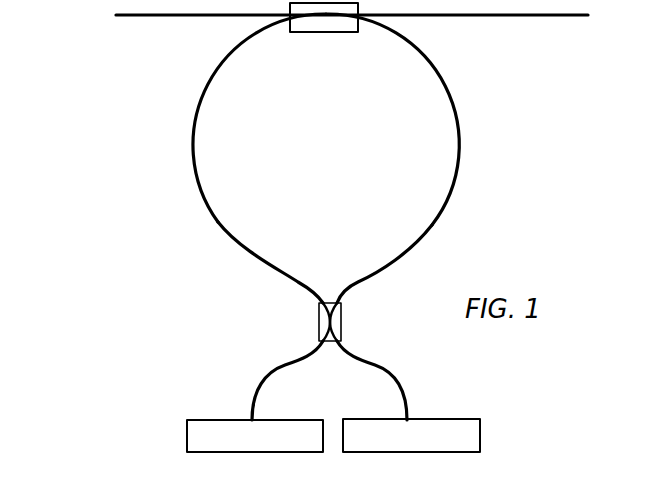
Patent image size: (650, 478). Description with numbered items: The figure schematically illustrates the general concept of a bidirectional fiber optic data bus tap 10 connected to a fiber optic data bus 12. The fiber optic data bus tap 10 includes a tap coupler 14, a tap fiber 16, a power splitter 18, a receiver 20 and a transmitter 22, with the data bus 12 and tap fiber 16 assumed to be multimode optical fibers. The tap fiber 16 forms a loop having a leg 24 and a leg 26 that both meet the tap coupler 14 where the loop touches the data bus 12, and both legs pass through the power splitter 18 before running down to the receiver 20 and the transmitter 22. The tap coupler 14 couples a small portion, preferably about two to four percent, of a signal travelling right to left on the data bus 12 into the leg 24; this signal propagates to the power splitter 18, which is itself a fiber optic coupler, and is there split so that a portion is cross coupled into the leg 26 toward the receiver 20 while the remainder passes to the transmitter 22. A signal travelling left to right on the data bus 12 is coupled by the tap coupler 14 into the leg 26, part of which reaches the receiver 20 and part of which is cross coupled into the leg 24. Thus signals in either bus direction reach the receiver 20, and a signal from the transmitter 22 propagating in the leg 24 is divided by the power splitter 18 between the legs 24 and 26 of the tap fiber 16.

The fiber optic data bus tap 10 is at (130, 55).
The fiber optic data bus 12 is at (557, 15).
The tap coupler 14 is at (324, 20).
The tap fiber 16 is at (346, 158).
The power splitter 18 is at (300, 324).
The receiver 20 is at (480, 435).
The transmitter 22 is at (187, 430).
The leg 24 is at (193, 150).
The leg 26 is at (433, 226).